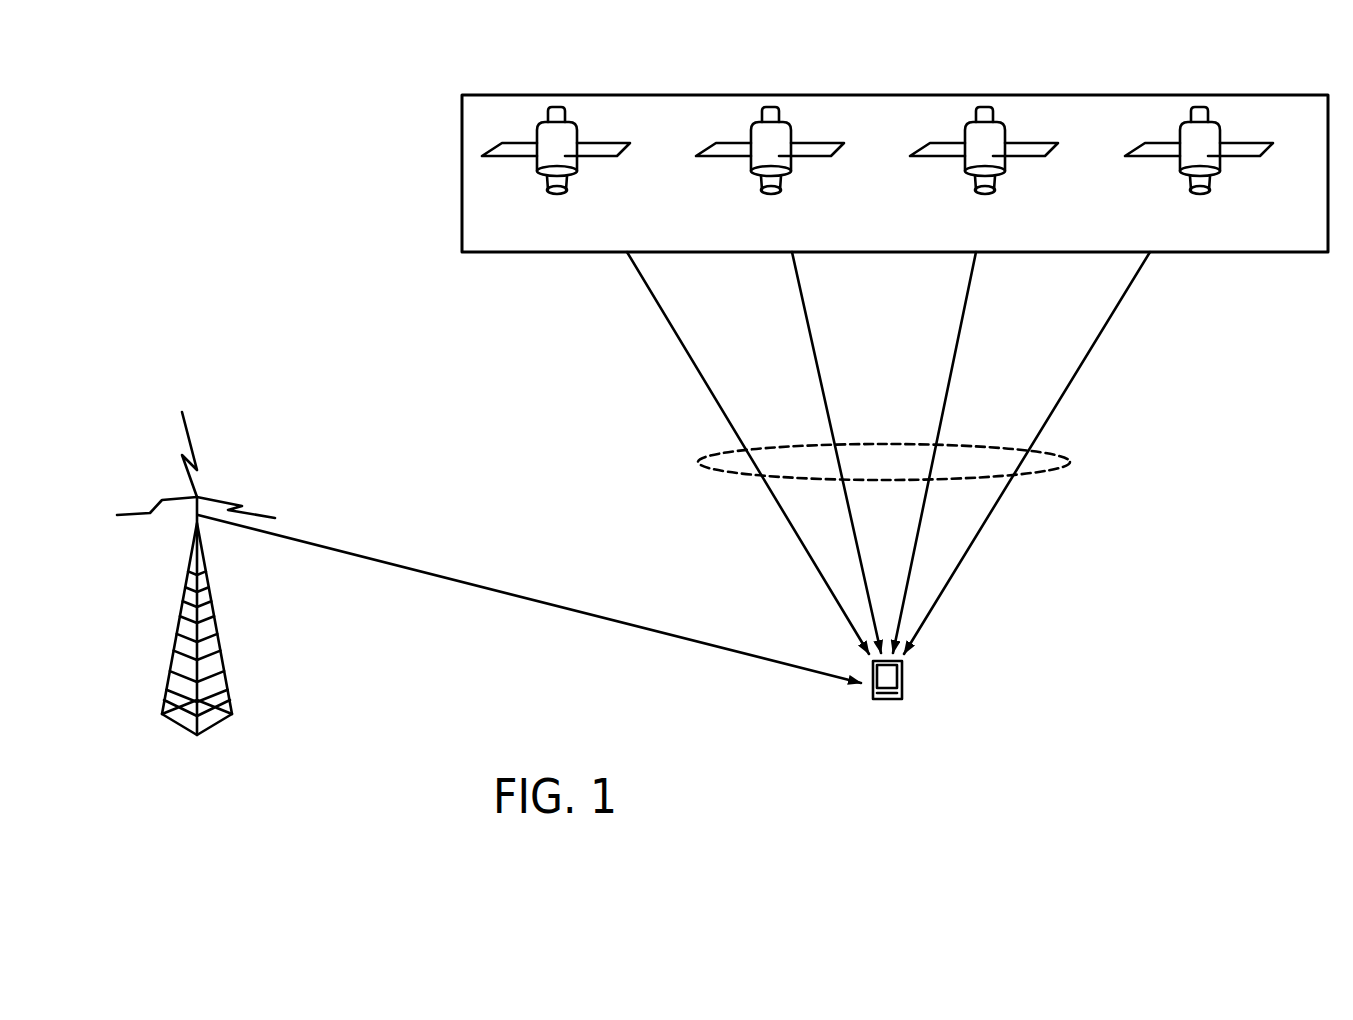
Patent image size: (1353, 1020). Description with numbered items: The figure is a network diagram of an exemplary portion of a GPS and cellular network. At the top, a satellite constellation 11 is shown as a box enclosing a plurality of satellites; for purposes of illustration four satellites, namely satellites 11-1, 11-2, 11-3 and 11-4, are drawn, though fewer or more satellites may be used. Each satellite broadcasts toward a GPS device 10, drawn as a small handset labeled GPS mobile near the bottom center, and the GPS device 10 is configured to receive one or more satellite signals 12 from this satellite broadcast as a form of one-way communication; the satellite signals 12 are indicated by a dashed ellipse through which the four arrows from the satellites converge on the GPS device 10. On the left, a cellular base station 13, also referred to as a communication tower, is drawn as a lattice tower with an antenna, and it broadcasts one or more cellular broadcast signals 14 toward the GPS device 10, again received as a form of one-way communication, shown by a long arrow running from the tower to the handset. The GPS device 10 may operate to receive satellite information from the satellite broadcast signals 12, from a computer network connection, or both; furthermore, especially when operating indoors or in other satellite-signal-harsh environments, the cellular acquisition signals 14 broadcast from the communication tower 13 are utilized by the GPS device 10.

The GPS device 10 is at (873, 786).
The satellite constellation 11 is at (805, 94).
The satellite 11-1 is at (668, 193).
The satellite 11-2 is at (789, 173).
The satellite 11-3 is at (1003, 173).
The satellite 11-4 is at (1218, 173).
The satellite signals 12 is at (1072, 466).
The cellular base station 13 is at (185, 871).
The cellular broadcast signals 14 is at (569, 607).